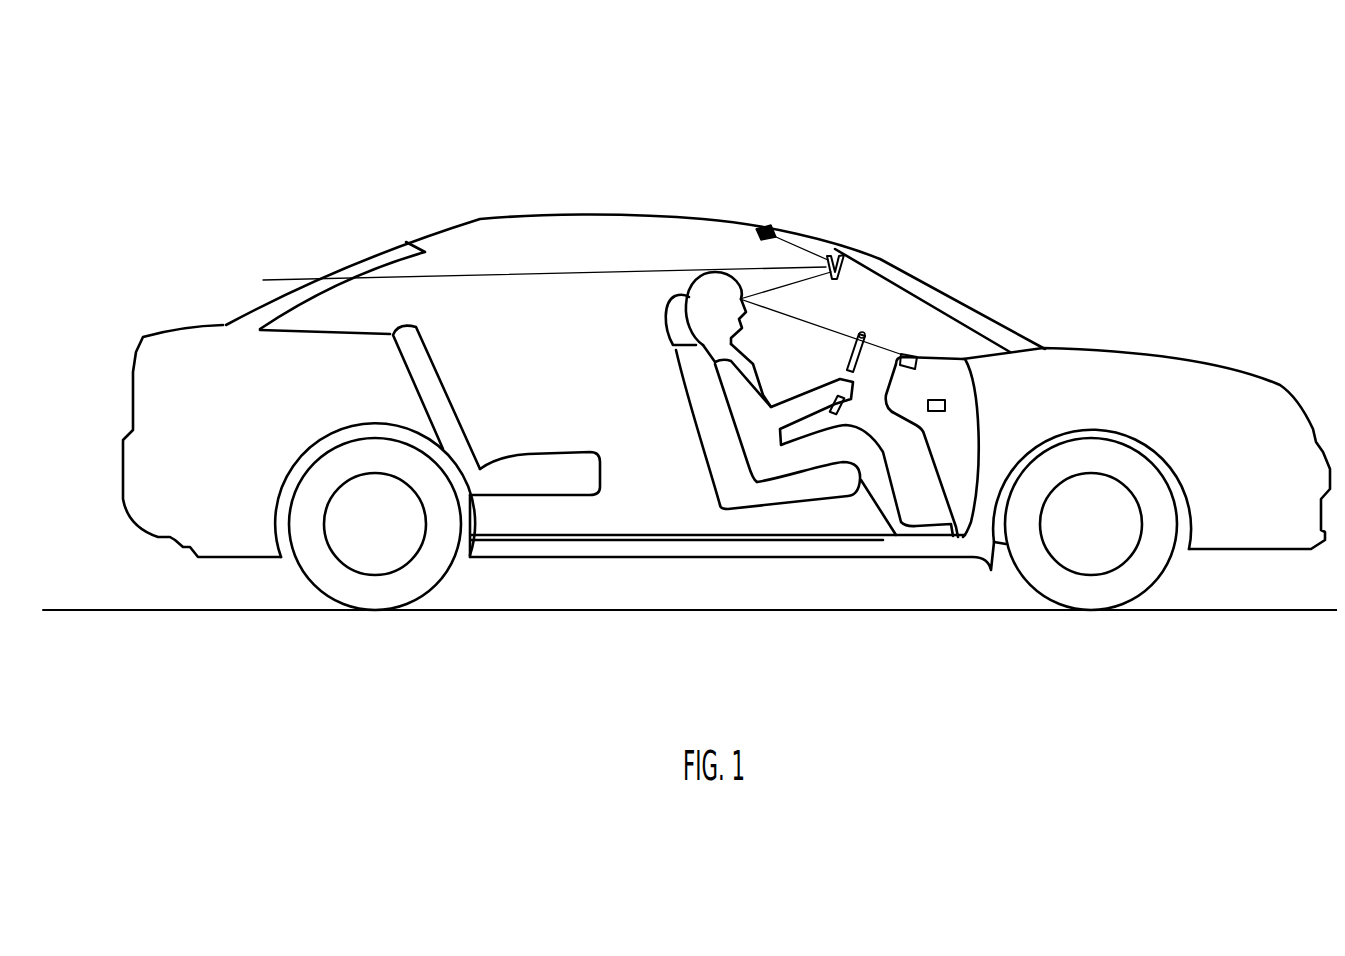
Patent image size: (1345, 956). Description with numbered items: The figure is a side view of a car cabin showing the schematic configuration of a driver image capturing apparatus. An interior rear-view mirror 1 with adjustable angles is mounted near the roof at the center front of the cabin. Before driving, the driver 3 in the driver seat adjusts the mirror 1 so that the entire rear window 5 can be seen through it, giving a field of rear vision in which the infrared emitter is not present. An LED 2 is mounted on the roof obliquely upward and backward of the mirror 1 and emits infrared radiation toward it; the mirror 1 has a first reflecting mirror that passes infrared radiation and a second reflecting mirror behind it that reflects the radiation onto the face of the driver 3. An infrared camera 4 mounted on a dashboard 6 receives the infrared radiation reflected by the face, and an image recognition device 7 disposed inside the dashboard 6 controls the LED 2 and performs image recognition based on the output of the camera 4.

The mirror 1 is at (827, 248).
The LED 2 is at (762, 223).
The driver 3 is at (703, 307).
The infrared camera 4 is at (907, 352).
The rear window 5 is at (243, 312).
The dashboard 6 is at (940, 373).
The image recognition device 7 is at (933, 409).